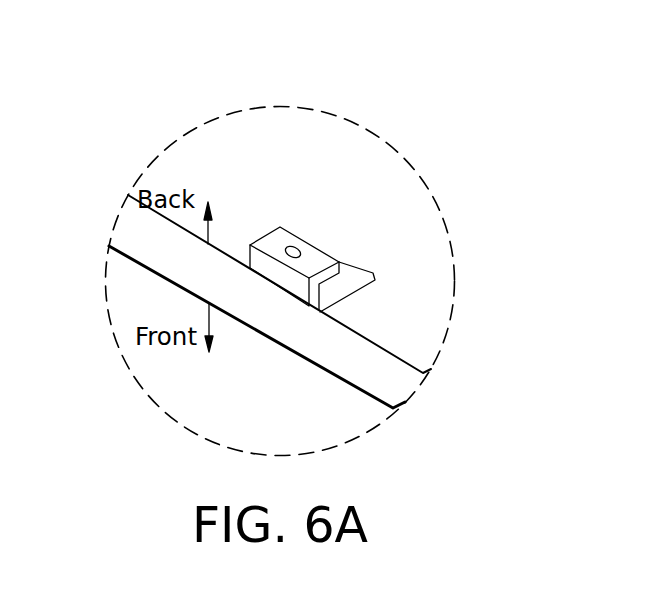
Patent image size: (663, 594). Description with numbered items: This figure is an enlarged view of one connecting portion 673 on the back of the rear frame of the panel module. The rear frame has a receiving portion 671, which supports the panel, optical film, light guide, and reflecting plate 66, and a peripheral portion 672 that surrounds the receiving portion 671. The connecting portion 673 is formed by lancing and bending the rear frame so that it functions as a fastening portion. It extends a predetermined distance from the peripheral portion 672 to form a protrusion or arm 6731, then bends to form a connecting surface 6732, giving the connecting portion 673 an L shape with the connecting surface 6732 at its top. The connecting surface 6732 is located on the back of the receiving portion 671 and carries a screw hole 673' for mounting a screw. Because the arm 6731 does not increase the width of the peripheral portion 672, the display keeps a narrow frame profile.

The reflecting plate 66 is at (342, 281).
The receiving portion 671 is at (410, 312).
The peripheral portion 672 is at (160, 245).
The connecting portion 673 is at (347, 156).
The protrusion (or arm) 6731 is at (258, 267).
The connecting surface 6732 is at (272, 243).
The screw hole 673' is at (415, 195).